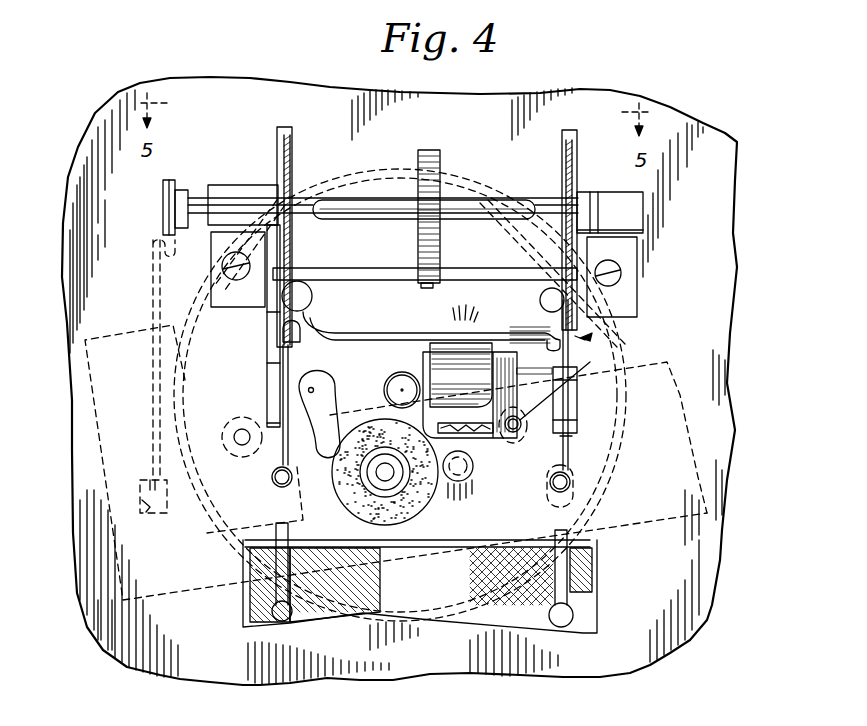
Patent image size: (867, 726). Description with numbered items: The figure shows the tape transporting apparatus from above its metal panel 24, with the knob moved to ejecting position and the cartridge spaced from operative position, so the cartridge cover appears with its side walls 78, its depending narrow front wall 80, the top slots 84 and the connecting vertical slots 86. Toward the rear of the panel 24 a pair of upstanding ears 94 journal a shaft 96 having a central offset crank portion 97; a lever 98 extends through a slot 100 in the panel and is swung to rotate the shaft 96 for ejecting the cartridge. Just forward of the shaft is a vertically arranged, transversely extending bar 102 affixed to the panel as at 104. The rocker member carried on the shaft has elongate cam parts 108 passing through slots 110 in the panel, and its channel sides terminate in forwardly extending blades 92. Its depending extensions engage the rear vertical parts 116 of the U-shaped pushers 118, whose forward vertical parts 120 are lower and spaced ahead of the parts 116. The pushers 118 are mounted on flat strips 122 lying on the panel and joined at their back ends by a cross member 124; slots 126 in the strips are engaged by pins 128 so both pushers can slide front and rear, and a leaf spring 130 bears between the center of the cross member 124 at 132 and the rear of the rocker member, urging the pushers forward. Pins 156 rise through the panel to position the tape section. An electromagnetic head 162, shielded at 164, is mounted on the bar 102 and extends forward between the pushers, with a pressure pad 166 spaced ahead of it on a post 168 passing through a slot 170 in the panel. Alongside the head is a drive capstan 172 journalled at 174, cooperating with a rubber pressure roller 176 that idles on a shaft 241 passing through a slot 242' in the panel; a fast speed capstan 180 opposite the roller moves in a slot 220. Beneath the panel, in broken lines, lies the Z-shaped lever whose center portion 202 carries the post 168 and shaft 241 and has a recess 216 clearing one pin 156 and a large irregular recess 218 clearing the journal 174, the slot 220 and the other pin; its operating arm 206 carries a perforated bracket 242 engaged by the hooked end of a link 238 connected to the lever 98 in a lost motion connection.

The metal panel 24 is at (399, 381).
The side walls 78 is at (243, 620).
The depending narrow integral wall 80 is at (342, 545).
The slots 84 is at (322, 608).
The vertical slots 86 is at (592, 522).
The blades 92 is at (288, 458).
The upstanding ears 94 is at (266, 185).
The shaft 96 is at (232, 196).
The central offset crank portion 97 is at (384, 200).
The lever 98 is at (175, 210).
The slot 100 is at (163, 189).
The bar 102 is at (360, 332).
The fastening point 104 is at (248, 307).
The cam part 108 is at (292, 165).
The slots 110 is at (277, 140).
The rear vertical parts 116 is at (577, 385).
The U-shaped pushers 118 is at (580, 340).
The vertical parts 120 is at (614, 434).
The flat strips 122 is at (267, 350).
The cross member 124 is at (538, 280).
The slots 126 is at (305, 315).
The pins 128 is at (306, 290).
The leaf spring 130 is at (440, 160).
The spring engagement point 132 is at (437, 283).
The pins 156 is at (272, 484).
The electromagnetic head 162 is at (470, 390).
The shield 164 is at (478, 435).
The pressure pad 166 is at (552, 492).
The post 168 is at (522, 422).
The slot 170 is at (590, 338).
The drive capstan 172 is at (432, 322).
The journal 174 is at (402, 388).
The rubber pressure roller 176 is at (455, 484).
The fast speed capstan 180 is at (306, 390).
The center portion 202 is at (700, 470).
The operating arm 206 is at (100, 458).
The slot or recess 216 is at (573, 490).
The large recess 218 is at (295, 500).
The slot 220 is at (325, 414).
The link 238 is at (153, 318).
The shaft 241 is at (387, 478).
The perforated bracket 242 is at (158, 515).
The slot 242' is at (340, 584).